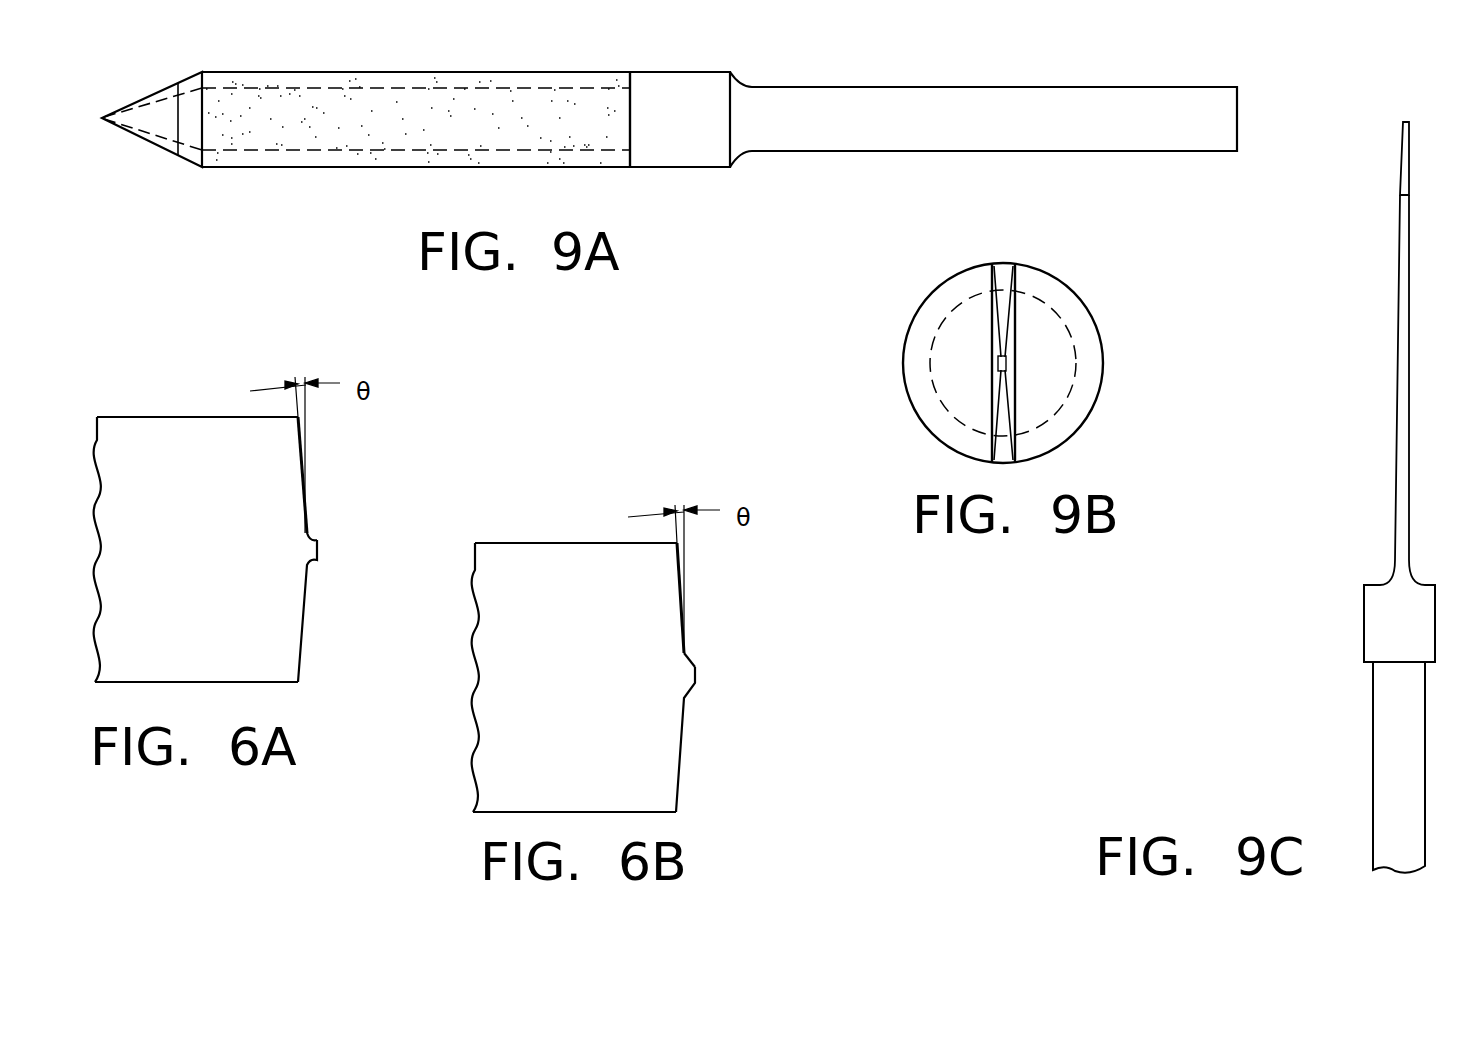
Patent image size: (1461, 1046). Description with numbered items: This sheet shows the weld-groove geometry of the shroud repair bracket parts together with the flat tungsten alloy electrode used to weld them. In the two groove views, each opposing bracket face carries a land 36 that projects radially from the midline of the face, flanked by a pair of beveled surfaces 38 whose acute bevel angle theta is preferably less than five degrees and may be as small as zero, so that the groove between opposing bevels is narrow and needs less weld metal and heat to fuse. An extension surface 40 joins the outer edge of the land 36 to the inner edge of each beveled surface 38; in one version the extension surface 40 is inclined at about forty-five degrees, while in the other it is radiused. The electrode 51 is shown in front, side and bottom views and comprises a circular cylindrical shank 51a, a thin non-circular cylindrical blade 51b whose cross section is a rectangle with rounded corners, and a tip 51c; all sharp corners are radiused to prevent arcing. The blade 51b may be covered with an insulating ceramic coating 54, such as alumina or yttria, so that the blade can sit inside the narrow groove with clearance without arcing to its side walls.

In FIG. 6A, the land 36 is at (318, 552).
In FIG. 6B, the land 36 is at (697, 680).
In FIG. 6A, the beveled surface 38 is at (305, 455).
In FIG. 6B, the beveled surface 38 is at (684, 583).
In FIG. 6A, the extension surface 40 is at (310, 535).
In FIG. 6B, the extension surface 40 is at (688, 660).
In FIG. 9C, the electrode 51 is at (1362, 556).
In FIG. 9A, the circular cylindrical shank 51a is at (972, 87).
In FIG. 9B, the circular cylindrical shank 51a is at (1047, 303).
In FIG. 9C, the circular cylindrical shank 51a is at (1383, 767).
In FIG. 9A, the non-circular cylindrical blade 51b is at (602, 168).
In FIG. 9B, the non-circular cylindrical blade 51b is at (1003, 263).
In FIG. 9C, the non-circular cylindrical blade 51b is at (1398, 276).
In FIG. 9A, the tip 51c is at (100, 118).
In FIG. 9B, the tip 51c is at (1010, 347).
In FIG. 9C, the tip 51c is at (1407, 121).
In FIG. 9A, the ceramic coating 54 is at (297, 155).